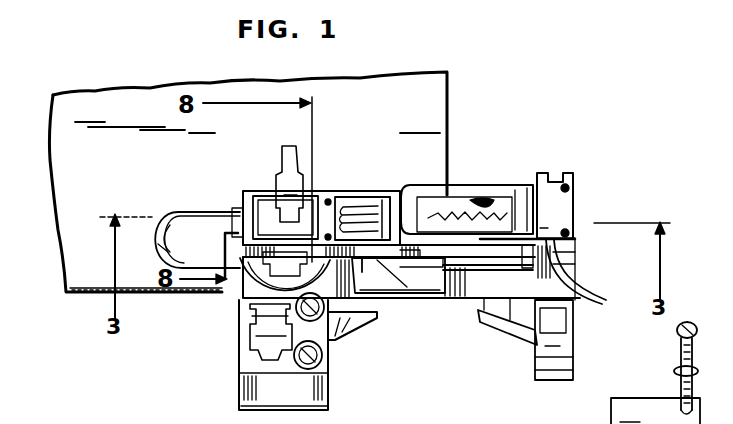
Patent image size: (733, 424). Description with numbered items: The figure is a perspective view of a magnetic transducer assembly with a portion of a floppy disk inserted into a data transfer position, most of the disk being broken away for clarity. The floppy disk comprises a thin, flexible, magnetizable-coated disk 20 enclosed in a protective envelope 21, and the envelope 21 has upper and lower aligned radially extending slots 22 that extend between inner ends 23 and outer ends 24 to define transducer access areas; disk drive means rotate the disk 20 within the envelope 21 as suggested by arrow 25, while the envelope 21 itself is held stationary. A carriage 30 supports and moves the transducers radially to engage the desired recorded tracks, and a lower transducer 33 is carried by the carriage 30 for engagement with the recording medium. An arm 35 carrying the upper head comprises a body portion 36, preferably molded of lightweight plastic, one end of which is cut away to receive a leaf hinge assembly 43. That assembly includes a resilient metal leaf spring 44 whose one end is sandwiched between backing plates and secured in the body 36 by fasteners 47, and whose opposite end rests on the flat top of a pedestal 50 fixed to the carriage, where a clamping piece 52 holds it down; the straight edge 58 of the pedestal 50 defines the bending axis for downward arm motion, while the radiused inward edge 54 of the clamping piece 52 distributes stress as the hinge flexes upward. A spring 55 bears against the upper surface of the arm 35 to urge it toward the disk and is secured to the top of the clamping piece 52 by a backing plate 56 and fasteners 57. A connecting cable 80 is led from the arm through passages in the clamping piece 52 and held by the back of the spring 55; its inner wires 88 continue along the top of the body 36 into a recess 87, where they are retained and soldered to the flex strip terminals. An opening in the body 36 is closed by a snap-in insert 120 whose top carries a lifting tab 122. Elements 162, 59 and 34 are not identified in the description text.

The protective envelope 21 is at (428, 103).
The wall opening 162 is at (449, 122).
The disk 20 is at (165, 235).
The radially extending slots 22 is at (202, 248).
The arrow 25 is at (197, 228).
The inner ends 23 is at (160, 250).
The snap-in insert 120 is at (264, 188).
The lifting tab 122 is at (285, 150).
The arm 35 is at (344, 186).
The body portion 36 is at (372, 186).
The spring 55 is at (452, 194).
The recess 87 is at (452, 203).
The fasteners 47 is at (494, 202).
The wires 88 is at (510, 204).
The carriage 30 is at (598, 165).
The backing plate 56 is at (575, 187).
The fasteners 57 is at (580, 222).
The bracket slot 59 is at (545, 240).
The clamping piece 52 is at (575, 258).
The leaf spring 44 is at (576, 267).
The connecting cable 80 is at (592, 303).
The pedestal 50 is at (558, 294).
The radiused inward edge 54 is at (486, 266).
The straight edge 58 is at (530, 277).
The leaf hinge assembly 43 is at (487, 283).
The outer ends 24 is at (386, 299).
The lower transducer 33 is at (262, 270).
The base block 34 is at (228, 392).